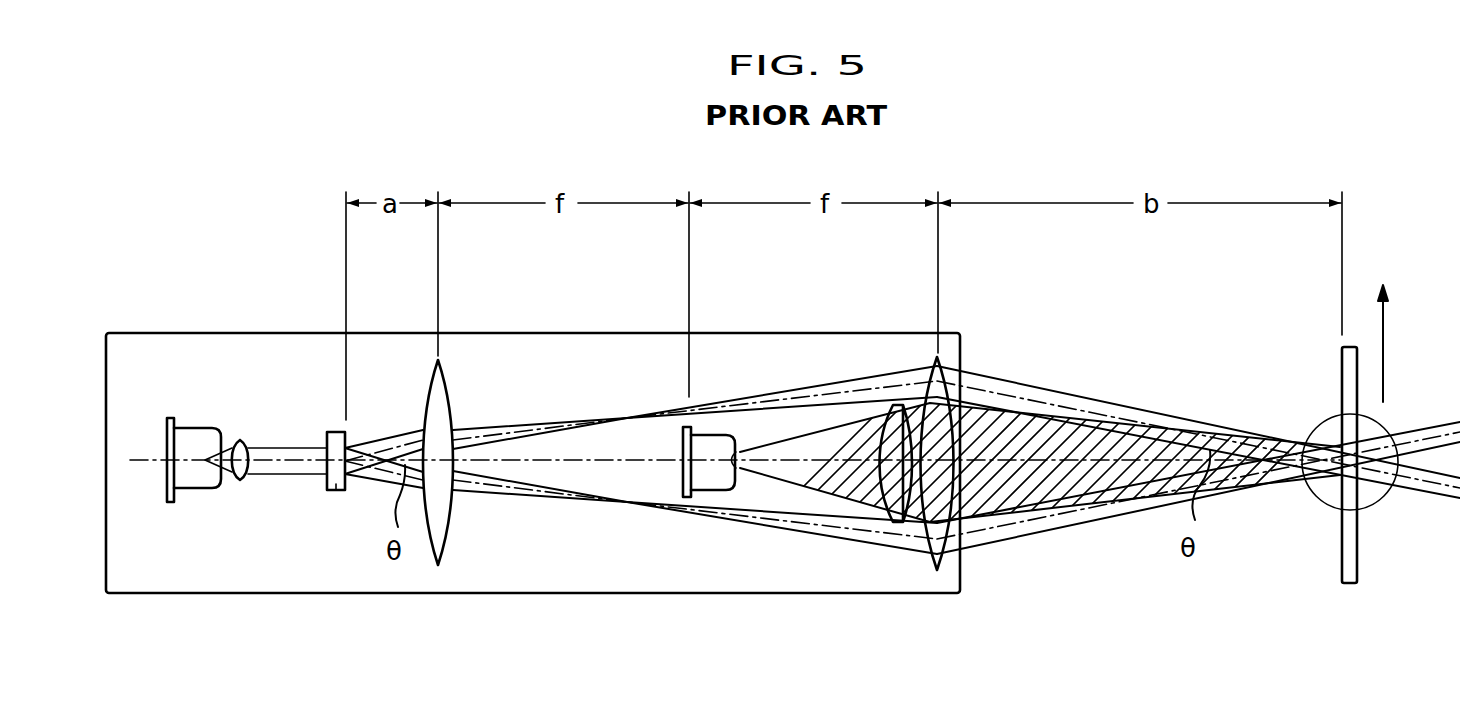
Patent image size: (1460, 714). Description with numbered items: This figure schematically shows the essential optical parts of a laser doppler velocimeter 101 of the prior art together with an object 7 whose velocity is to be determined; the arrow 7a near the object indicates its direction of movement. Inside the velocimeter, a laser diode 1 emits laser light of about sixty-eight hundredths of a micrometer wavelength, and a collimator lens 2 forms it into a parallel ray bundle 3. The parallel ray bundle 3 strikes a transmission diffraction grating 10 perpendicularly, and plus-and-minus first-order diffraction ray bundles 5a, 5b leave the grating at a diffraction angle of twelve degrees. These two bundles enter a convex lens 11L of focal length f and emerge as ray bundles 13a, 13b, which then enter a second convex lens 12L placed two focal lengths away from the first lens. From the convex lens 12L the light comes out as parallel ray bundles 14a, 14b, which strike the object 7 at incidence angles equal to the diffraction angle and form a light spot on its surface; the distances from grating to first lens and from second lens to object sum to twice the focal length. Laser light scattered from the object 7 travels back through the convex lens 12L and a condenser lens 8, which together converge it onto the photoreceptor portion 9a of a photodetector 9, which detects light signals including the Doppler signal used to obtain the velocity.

The laser doppler velocimeter 101 is at (188, 333).
The laser diode 1 is at (199, 483).
The collimator lens 2 is at (248, 441).
The parallel ray bundle 3 is at (303, 465).
The diffraction grating 10 is at (333, 492).
The ray bundle 5a is at (397, 440).
The ray bundle 5b is at (380, 478).
The convex lens 11L is at (433, 567).
The ray bundle 13a is at (500, 428).
The ray bundle 13b is at (500, 492).
The photodetector 9 is at (716, 500).
The reflecting surface 9a is at (718, 445).
The condenser lens 8 is at (886, 524).
The convex lens 12L is at (937, 572).
The parallel ray bundle 14a is at (1010, 384).
The parallel ray bundle 14b is at (1050, 537).
The object 7 is at (1340, 558).
The movement direction of scale 7a is at (1385, 358).